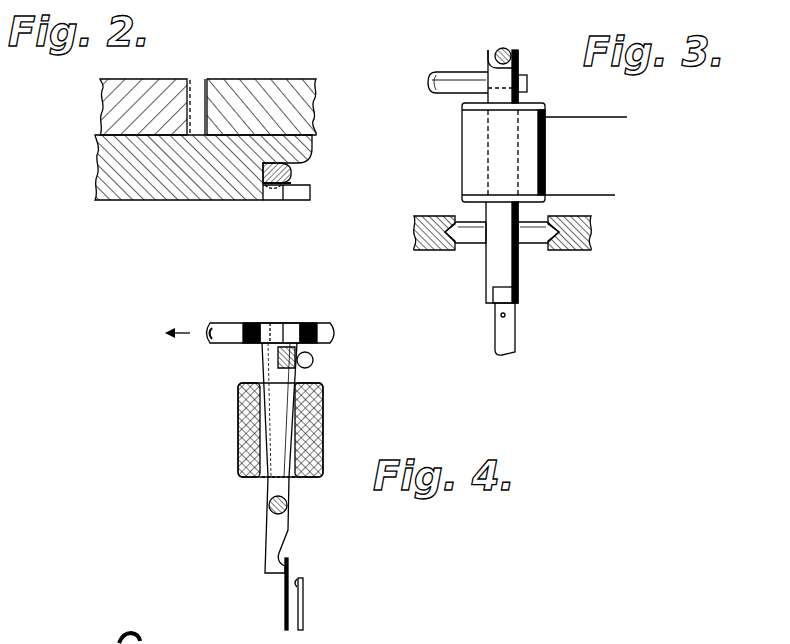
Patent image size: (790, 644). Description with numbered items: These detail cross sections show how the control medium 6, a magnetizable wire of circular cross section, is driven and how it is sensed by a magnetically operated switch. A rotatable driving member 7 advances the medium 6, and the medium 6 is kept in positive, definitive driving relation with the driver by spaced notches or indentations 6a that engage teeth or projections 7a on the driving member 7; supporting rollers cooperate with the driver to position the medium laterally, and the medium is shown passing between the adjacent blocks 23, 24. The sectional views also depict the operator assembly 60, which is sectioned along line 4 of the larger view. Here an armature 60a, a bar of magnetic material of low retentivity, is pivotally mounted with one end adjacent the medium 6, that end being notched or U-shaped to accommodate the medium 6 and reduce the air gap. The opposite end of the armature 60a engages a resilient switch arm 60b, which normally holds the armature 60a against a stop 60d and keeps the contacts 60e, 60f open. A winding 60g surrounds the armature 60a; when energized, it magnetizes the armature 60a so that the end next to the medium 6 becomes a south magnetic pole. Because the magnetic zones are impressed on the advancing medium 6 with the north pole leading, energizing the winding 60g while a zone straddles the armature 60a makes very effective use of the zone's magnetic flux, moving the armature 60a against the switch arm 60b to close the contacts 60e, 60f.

In FIG. 2, the first platen block 23 is at (160, 80).
In FIG. 2, the second platen block 24 is at (282, 80).
In FIG. 2, the rotatable driving member 7 is at (212, 202).
In FIG. 2, the teeth or projections 7a is at (318, 192).
In FIG. 2, the control medium 6 is at (300, 172).
In FIG. 3, the control medium 6 is at (512, 50).
In FIG. 4, the control medium 6 is at (340, 318).
In FIG. 2, the notches or indentations 6a is at (276, 200).
In FIG. 3, the section line 4— 4 is at (503, 44).
In FIG. 3, the cam follower assembly 60 is at (602, 162).
In FIG. 4, the cam follower assembly 60 is at (342, 450).
In FIG. 3, the armature 60a is at (518, 292).
In FIG. 4, the armature 60a is at (288, 533).
In FIG. 4, the resilient switch arm 60b is at (285, 628).
In FIG. 3, the stop 60d is at (460, 72).
In FIG. 4, the stop 60d is at (314, 363).
In FIG. 4, the contact 60e is at (296, 578).
In FIG. 4, the contact 60f is at (310, 586).
In FIG. 3, the winding 60g is at (462, 160).
In FIG. 4, the winding 60g is at (238, 440).